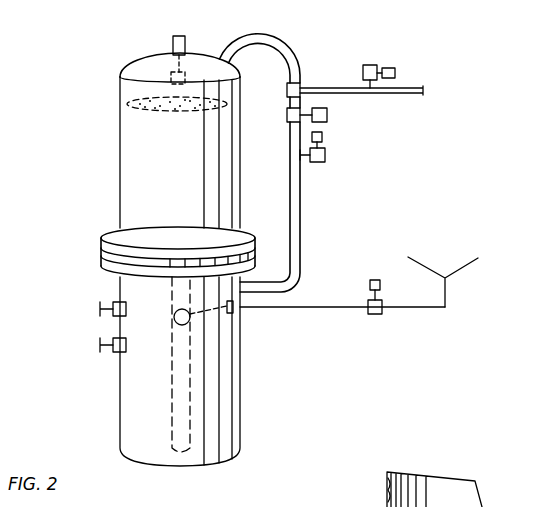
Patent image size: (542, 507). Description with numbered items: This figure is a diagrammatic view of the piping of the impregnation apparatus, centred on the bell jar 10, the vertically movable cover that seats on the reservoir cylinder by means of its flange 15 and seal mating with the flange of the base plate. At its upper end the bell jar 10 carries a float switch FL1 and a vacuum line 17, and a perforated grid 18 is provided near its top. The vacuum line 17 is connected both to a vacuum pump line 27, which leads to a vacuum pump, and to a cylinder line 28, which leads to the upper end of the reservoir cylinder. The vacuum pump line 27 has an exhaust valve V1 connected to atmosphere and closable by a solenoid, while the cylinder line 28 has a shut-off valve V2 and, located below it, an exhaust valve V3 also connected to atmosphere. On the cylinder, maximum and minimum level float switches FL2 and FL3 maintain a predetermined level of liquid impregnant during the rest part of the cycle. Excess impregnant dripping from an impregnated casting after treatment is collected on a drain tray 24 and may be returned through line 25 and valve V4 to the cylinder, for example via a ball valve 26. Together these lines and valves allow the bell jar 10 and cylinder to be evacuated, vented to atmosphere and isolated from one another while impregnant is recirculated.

The bell jar 10 is at (120, 226).
The float switch FL1 is at (178, 36).
The vacuum line 17 is at (287, 50).
The perforated grid 18 is at (127, 104).
The exhaust valve V1 is at (374, 65).
The shut-off valve V2 is at (327, 116).
The exhaust valve V3 is at (325, 156).
The valve V4 is at (370, 285).
The vacuum pump line 27 is at (423, 94).
The cylinder line 28 is at (300, 220).
The drain tray 24 is at (481, 264).
The line 25 is at (313, 309).
The ball valve 26 is at (192, 322).
The maximum level float switch FL2 is at (98, 308).
The minimum level float switch FL3 is at (98, 345).
The flange 15 is at (362, 506).